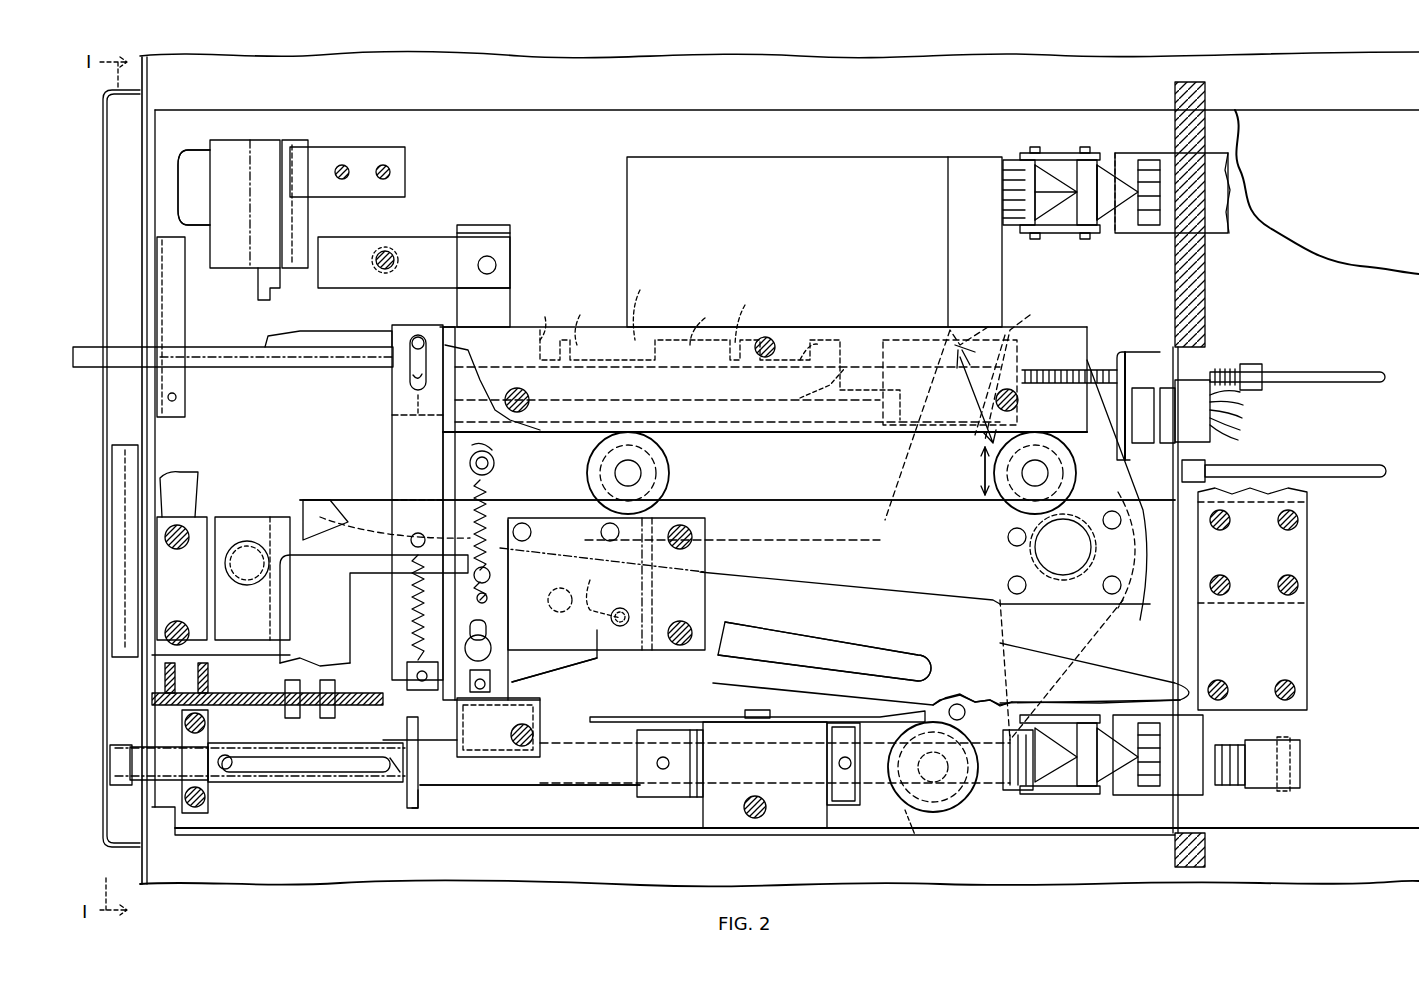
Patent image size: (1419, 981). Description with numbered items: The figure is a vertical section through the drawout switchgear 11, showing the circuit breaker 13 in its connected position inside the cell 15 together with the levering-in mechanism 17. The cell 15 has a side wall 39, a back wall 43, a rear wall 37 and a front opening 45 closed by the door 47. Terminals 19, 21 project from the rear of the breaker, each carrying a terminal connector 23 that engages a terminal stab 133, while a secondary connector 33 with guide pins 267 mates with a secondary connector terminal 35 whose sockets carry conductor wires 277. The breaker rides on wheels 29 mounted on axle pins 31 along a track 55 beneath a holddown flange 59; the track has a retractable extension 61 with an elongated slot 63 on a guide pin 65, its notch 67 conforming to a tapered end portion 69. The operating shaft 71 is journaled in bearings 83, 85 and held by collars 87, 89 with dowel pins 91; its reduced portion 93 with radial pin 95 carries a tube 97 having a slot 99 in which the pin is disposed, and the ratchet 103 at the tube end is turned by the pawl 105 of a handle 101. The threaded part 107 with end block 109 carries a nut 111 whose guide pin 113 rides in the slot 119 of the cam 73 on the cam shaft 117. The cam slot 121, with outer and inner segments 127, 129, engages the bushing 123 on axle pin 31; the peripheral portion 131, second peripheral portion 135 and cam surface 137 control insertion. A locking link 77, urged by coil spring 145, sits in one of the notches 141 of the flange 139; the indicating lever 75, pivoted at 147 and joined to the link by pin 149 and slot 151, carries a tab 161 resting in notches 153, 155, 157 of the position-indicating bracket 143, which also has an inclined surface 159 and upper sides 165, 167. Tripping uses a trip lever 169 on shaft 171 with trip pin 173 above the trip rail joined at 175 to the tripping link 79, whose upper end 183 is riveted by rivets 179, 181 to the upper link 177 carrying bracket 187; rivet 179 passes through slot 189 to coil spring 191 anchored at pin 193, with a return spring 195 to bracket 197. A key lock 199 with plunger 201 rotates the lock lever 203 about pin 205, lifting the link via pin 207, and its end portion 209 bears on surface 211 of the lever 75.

The drawout switchgear 11 is at (1031, 899).
The circuit breaker 13 is at (656, 163).
The cell 15 is at (593, 882).
The levering-in mechanism 17 is at (530, 802).
The terminal 19 is at (1008, 155).
The terminal 21 is at (1005, 705).
The terminal connector 23 is at (1045, 160).
The wheel 29 is at (668, 472).
The axle pin 31 is at (640, 468).
The secondary connector 33 is at (1138, 406).
The secondary connector terminal 35 is at (1185, 411).
The rear wall 37 is at (1206, 250).
The side wall 39 is at (727, 81).
The back wall 43 is at (1418, 80).
The front opening 45 is at (148, 78).
The door 47 is at (106, 135).
The track 55 is at (737, 520).
The holddown flange 59 is at (765, 449).
The retractable extension 61 is at (272, 515).
The elongated slot 63 is at (840, 642).
The guide pin 65 is at (246, 575).
The notch 67 is at (333, 520).
The tapered end portion 69 is at (318, 502).
The operating shaft 71 is at (487, 775).
The cam 73 is at (1090, 635).
The indicating lever 75 is at (283, 365).
The locking link 77 is at (390, 456).
The tripping link 79 is at (495, 634).
The bearing 83 is at (210, 797).
The bearing 85 is at (725, 830).
The collar 87 is at (585, 662).
The collar 89 is at (840, 800).
The dowel pin 91 is at (656, 763).
The reduced portion 93 is at (398, 772).
The radially extending pin 95 is at (222, 755).
The tube 97 is at (258, 752).
The slot 99 is at (318, 757).
The ratchet wrench 101 is at (120, 514).
The ratchet 103 is at (118, 752).
The pawl 105 is at (118, 724).
The threaded part 107 is at (1240, 735).
The block 109 is at (1270, 757).
The nut 111 is at (924, 767).
The guide pin 113 is at (925, 839).
The cam shaft 117 is at (1075, 550).
The slot 119 is at (962, 690).
The cam slot 121 is at (985, 398).
The bushing 123 is at (978, 460).
The outer segment 127 is at (966, 372).
The inner segment 129 is at (978, 478).
The peripheral portion 131 is at (1070, 330).
The terminal stab 133 is at (1133, 230).
The second peripheral portion 135 is at (958, 325).
The cam surface 137 is at (1020, 367).
The flange 139 is at (418, 760).
The notch 141 is at (420, 798).
The position-indicating bracket 143 is at (836, 373).
The coil spring 145 is at (395, 598).
The pivot 147 is at (762, 336).
The pin 149 is at (418, 333).
The slot 151 is at (405, 382).
The notch 153 is at (589, 318).
The notch 155 is at (663, 340).
The notch 157 is at (750, 313).
The inclined surface 159 is at (824, 343).
The tab 161 is at (537, 320).
The upper side 165 is at (652, 303).
The upper side 167 is at (710, 319).
The trip lever 169 is at (584, 589).
The shaft 171 is at (640, 605).
The trip pin 173 is at (558, 590).
The joint 175 is at (545, 722).
The upper link 177 is at (510, 300).
The rivet 179 is at (496, 458).
The rivet 181 is at (540, 650).
The upper end 183 is at (466, 408).
The bracket 187 is at (412, 422).
The slot 189 is at (470, 462).
The coil spring 191 is at (497, 485).
The pin 193 is at (492, 573).
The return spring 195 is at (492, 598).
The bracket 197 is at (525, 703).
The key lock 199 is at (225, 136).
The plunger 201 is at (246, 178).
The lock lever 203 is at (345, 243).
The pin 205 is at (390, 252).
The pin 207 is at (494, 262).
The end portion 209 is at (272, 298).
The surface 211 is at (278, 335).
The guide pin 267 is at (1325, 378).
The conductor wire 277 is at (1245, 410).